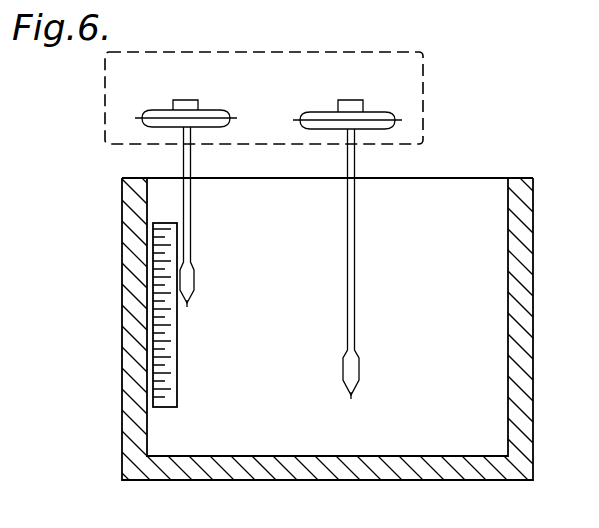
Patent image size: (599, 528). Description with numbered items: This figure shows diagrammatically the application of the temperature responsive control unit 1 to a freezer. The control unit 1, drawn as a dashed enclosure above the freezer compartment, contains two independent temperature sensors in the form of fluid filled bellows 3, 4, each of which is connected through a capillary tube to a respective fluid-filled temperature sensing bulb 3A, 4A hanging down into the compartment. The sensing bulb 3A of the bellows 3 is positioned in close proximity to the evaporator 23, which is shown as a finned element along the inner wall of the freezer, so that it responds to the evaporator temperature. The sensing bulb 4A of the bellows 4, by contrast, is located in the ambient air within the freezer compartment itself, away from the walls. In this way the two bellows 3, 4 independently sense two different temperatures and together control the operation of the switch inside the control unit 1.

The temperature responsive control unit 1 is at (430, 133).
The fluid filled bellows 3 is at (158, 113).
The fluid filled bellows 4 is at (316, 113).
The temperature sensing bulb 3A is at (195, 290).
The temperature sensing bulb 4A is at (358, 383).
The evaporator 23 is at (178, 387).